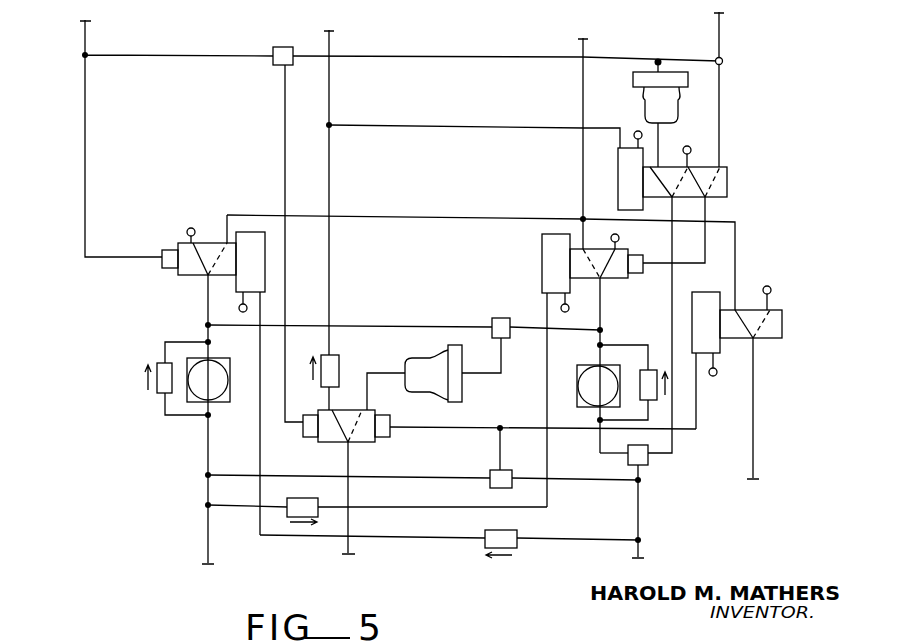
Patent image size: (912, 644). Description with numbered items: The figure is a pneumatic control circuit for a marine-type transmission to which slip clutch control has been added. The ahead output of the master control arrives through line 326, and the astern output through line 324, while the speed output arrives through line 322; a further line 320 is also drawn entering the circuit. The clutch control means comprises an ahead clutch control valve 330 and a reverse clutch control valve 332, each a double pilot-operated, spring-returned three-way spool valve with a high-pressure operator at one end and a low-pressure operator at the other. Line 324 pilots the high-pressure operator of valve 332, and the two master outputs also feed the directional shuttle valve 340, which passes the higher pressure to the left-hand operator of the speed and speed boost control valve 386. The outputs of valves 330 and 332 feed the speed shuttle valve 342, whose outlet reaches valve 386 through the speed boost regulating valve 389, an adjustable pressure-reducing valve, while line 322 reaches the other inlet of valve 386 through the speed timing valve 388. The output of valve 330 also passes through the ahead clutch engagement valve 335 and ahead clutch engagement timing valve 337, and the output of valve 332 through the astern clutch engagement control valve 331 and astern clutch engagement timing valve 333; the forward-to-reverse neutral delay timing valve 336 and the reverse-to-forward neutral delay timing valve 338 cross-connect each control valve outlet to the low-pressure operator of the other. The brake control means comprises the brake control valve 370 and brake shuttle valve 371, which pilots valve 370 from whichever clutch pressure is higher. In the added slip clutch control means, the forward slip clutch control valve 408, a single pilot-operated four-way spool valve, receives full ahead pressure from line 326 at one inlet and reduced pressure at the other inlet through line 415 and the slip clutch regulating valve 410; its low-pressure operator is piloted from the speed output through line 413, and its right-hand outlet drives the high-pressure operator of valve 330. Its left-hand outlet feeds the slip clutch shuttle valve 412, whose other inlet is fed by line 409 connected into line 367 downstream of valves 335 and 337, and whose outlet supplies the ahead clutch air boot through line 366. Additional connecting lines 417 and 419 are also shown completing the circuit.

The supply line 320 is at (582, 42).
The speed outlet line 322 is at (331, 32).
The astern output line 324 is at (86, 22).
The ahead output line 326 is at (720, 38).
The ahead clutch control valve 330 is at (542, 250).
The astern clutch engagement control valve 331 is at (218, 403).
The reverse clutch control valve 332 is at (248, 232).
The astern clutch engagement timing valve 333 is at (158, 364).
The ahead clutch engagement valve 335 is at (580, 367).
The forward-to-reverse neutral delay timing valve 336 is at (300, 498).
The ahead clutch engagement timing valve 337 is at (652, 368).
The reverse-to-forward neutral delay timing valve 338 is at (516, 530).
The directional shuttle valve 340 is at (275, 47).
The speed shuttle valve 342 is at (498, 318).
The ahead clutch line 366 is at (639, 525).
The ahead clutch engagement line 367 is at (600, 302).
The brake control valve 370 is at (782, 322).
The brake shuttle valve 371 is at (490, 473).
The speed and speed boost control valve 386 is at (366, 442).
The speed timing valve 388 is at (353, 360).
The speed boost regulating valve 389 is at (428, 393).
The forward slip clutch control valve 408 is at (727, 182).
The slip clutch feedback line 409 is at (608, 455).
The slip clutch regulating valve 410 is at (643, 104).
The slip clutch shuttle valve 412 is at (649, 464).
The slip clutch pilot line 413 is at (440, 126).
The reduced pressure supply line 415 is at (655, 62).
The line 417 is at (708, 242).
The line 419 is at (673, 240).